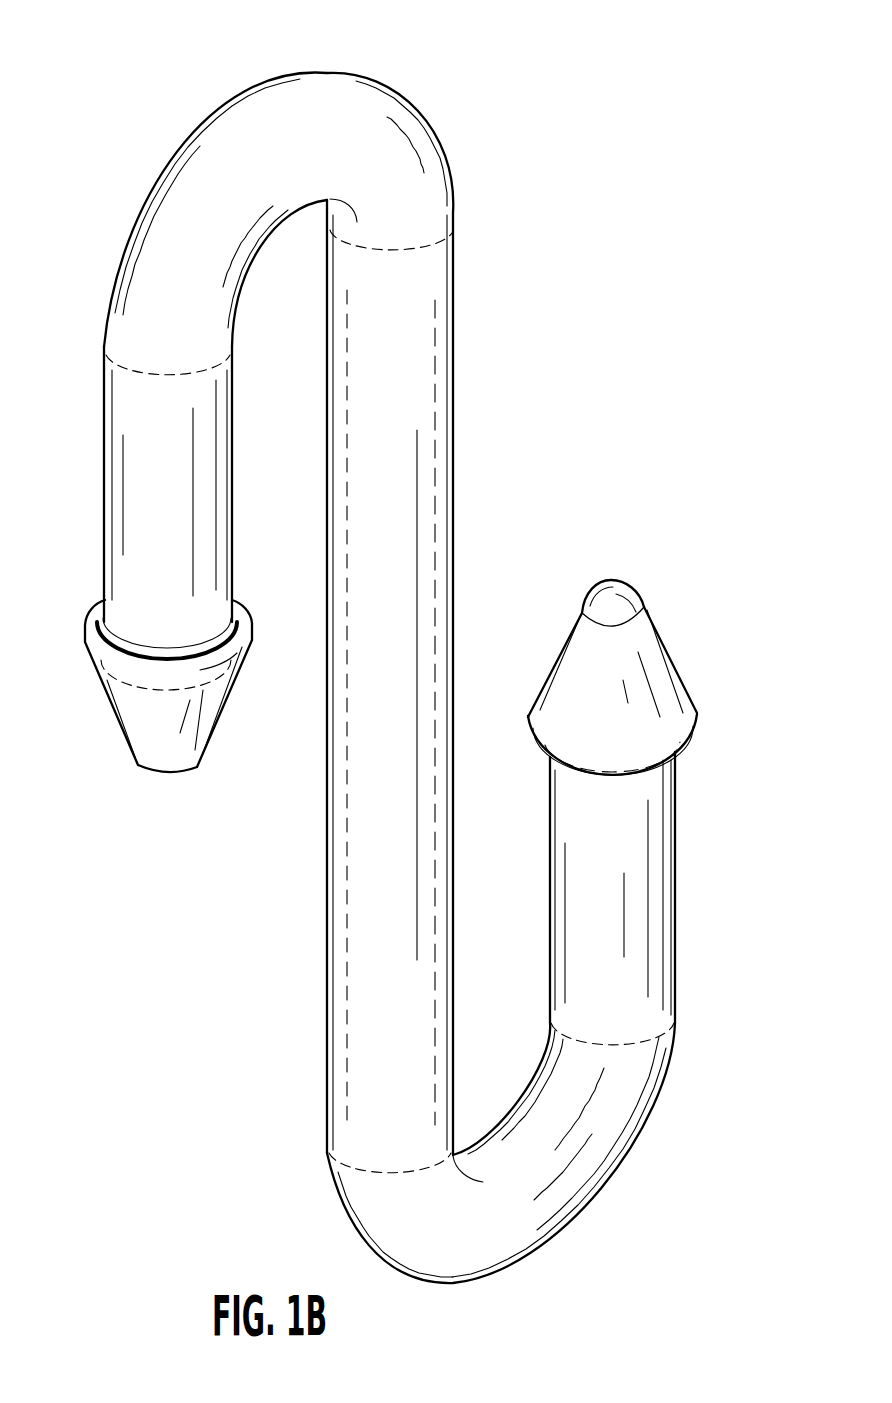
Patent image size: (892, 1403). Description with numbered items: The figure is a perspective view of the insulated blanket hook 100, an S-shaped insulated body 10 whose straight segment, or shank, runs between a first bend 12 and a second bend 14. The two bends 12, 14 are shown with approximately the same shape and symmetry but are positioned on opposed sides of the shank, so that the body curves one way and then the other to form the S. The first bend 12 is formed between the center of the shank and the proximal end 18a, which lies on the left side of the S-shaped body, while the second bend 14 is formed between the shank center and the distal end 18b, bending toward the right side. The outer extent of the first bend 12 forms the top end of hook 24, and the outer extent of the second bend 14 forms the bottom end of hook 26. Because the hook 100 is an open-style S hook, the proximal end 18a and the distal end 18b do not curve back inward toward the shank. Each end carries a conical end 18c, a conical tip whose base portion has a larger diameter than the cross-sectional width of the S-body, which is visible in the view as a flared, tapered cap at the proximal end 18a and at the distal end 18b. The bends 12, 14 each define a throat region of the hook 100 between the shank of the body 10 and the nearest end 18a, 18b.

The insulated blanket hook 100 is at (436, 660).
The body 10 is at (328, 797).
The first bend 12 is at (294, 268).
The second bend 14 is at (504, 1058).
The proximal end 18a is at (173, 770).
The distal end 18b is at (623, 580).
The conical end 18c is at (684, 668).
The top end of hook 24 is at (326, 72).
The bottom end of hook 26 is at (530, 1262).